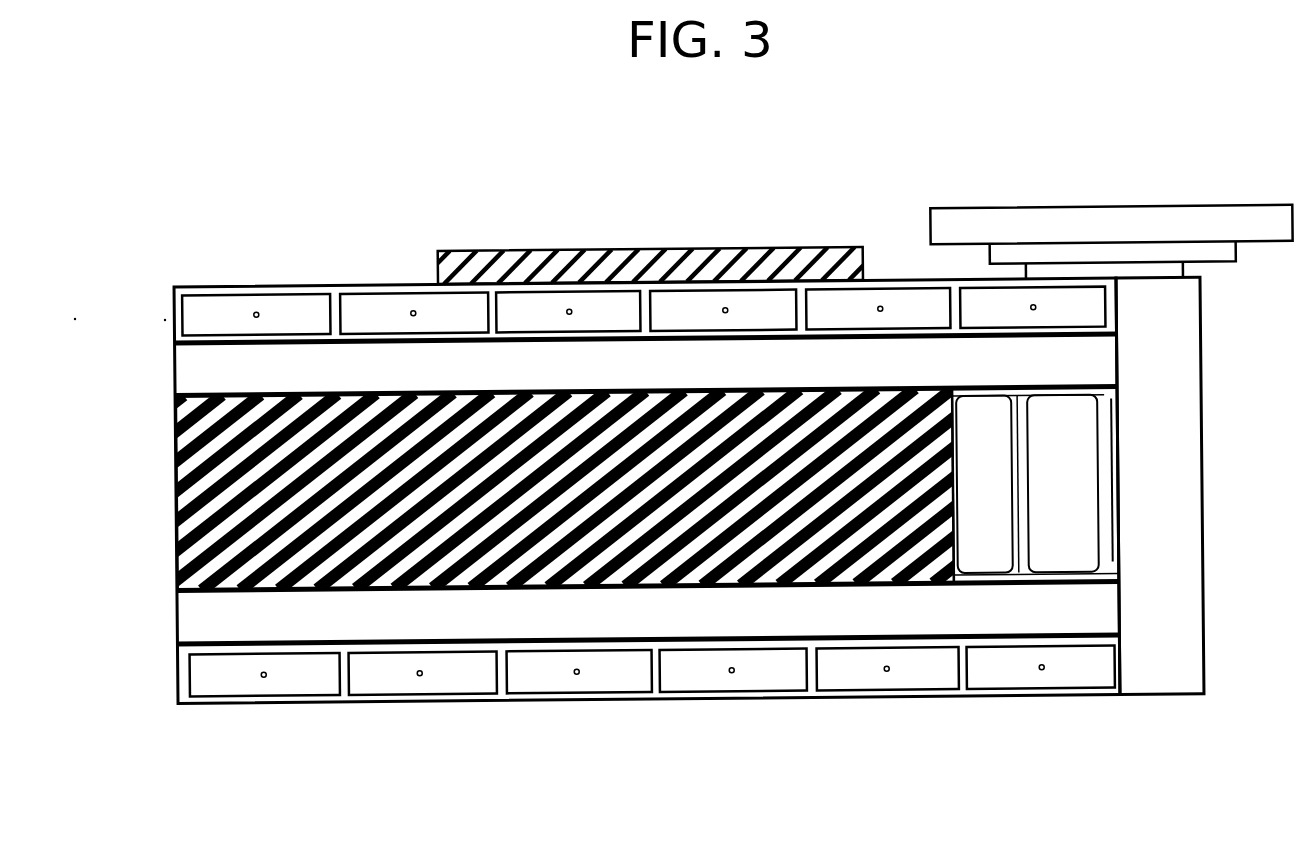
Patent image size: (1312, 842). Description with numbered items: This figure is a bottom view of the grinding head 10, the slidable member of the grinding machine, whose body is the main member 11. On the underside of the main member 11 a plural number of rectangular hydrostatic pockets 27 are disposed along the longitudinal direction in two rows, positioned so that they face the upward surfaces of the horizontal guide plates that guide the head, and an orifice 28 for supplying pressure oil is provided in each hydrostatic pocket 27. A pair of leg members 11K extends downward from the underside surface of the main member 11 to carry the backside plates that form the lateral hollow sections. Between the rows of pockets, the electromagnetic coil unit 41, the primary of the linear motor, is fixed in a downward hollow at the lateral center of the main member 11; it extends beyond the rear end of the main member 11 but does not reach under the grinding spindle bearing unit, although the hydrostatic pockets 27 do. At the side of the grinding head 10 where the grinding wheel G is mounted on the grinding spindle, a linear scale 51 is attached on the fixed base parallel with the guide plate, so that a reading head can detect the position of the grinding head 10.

The grinding head 10 is at (1118, 722).
The main member 11 is at (208, 627).
The leg member 11K is at (288, 363).
The hydrostatic pocket 27 is at (305, 310).
The orifice 28 is at (1035, 305).
The electromagnetic coil unit 41 is at (630, 545).
The linear scale 51 is at (632, 247).
The grinding wheel G is at (1068, 212).